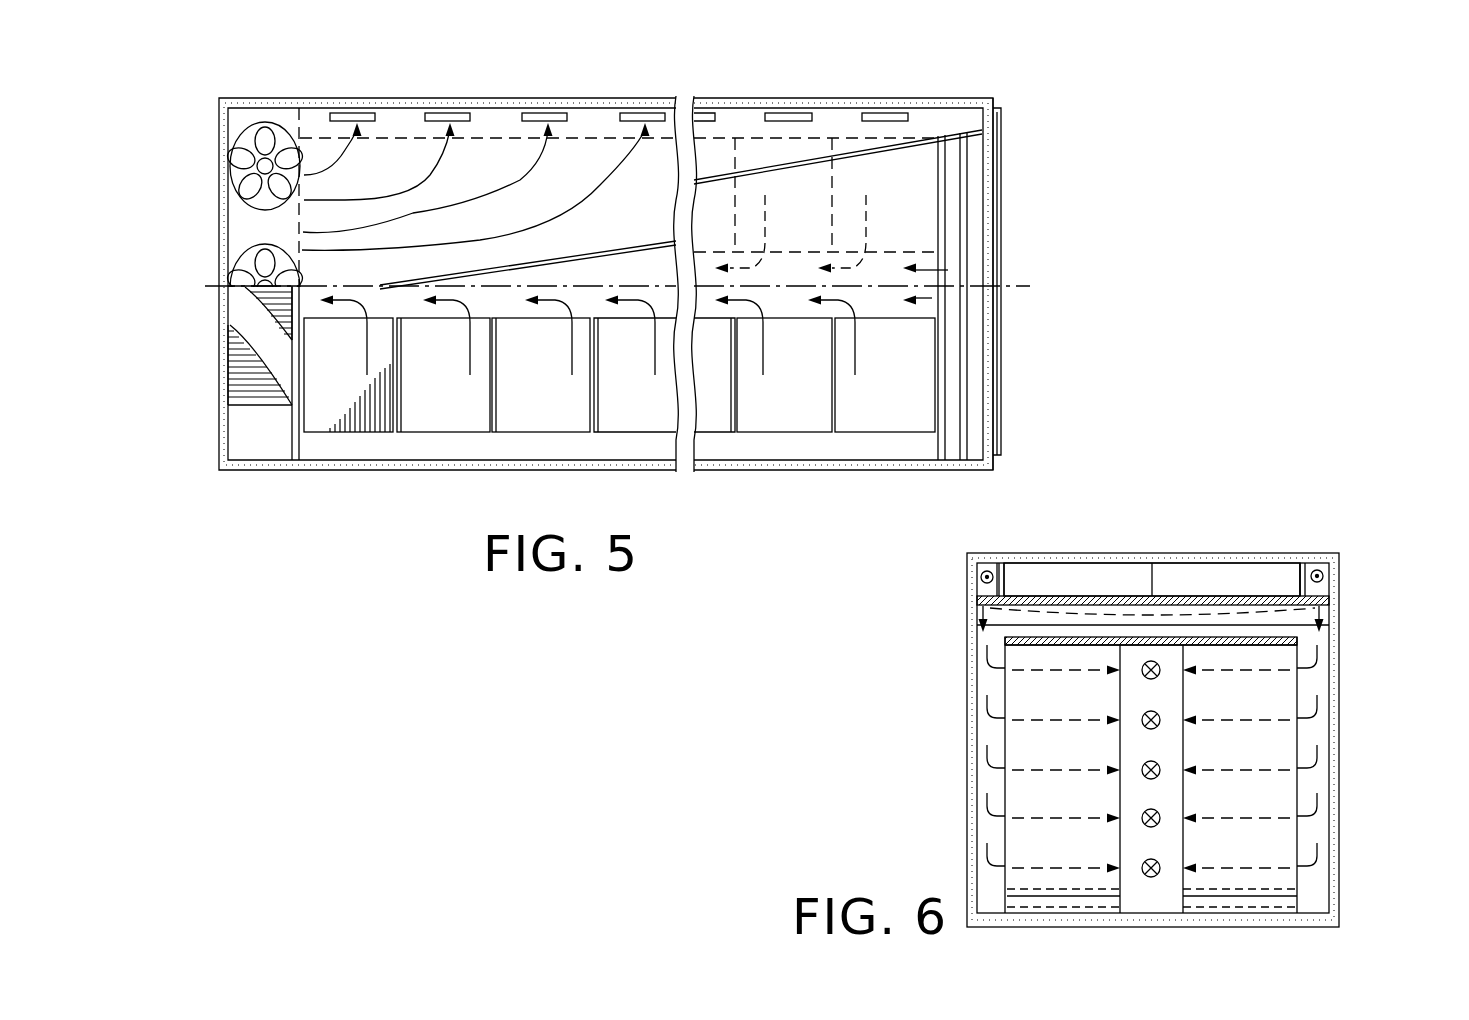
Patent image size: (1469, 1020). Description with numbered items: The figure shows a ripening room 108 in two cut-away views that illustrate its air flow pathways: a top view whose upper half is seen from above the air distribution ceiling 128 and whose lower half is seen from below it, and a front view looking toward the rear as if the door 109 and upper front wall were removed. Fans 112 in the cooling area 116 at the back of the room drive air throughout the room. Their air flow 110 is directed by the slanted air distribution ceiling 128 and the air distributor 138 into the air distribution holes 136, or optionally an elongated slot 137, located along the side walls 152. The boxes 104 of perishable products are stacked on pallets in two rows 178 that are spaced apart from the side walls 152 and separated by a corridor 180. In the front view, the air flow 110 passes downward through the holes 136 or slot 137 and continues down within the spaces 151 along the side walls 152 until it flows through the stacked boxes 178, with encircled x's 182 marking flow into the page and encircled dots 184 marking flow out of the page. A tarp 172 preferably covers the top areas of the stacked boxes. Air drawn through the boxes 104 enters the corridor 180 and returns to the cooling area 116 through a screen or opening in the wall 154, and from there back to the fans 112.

In FIG. 5, the boxes of perishable products 104 is at (311, 357).
In FIG. 6, the boxes of perishable products 104 is at (1017, 690).
In FIG. 6, the ripening room 108 is at (1375, 637).
In FIG. 5, the door 109 is at (1002, 180).
In FIG. 5, the air flow 110 is at (432, 216).
In FIG. 6, the air flow 110 is at (1330, 574).
In FIG. 5, the fans 112 is at (238, 131).
In FIG. 5, the cooling area 116 is at (219, 477).
In FIG. 5, the air distribution ceiling 128 is at (535, 202).
In FIG. 5, the holes 136 is at (366, 112).
In FIG. 6, the holes 136 is at (977, 597).
In FIG. 6, the slot 137 is at (1330, 598).
In FIG. 5, the air distributor 138 is at (712, 181).
In FIG. 6, the air distributor 138 is at (1058, 578).
In FIG. 6, the spaces 151 is at (965, 780).
In FIG. 5, the side walls 152 is at (942, 110).
In FIG. 6, the side walls 152 is at (1313, 726).
In FIG. 6, the wall 154 is at (1132, 702).
In FIG. 6, the tarp 172 is at (1152, 579).
In FIG. 5, the rows of boxes 178 is at (908, 348).
In FIG. 6, the rows of boxes 178 is at (1036, 805).
In FIG. 5, the corridor 180 is at (932, 298).
In FIG. 6, the encircled x's 182 is at (1147, 860).
In FIG. 6, the encircled dots 184 is at (982, 575).